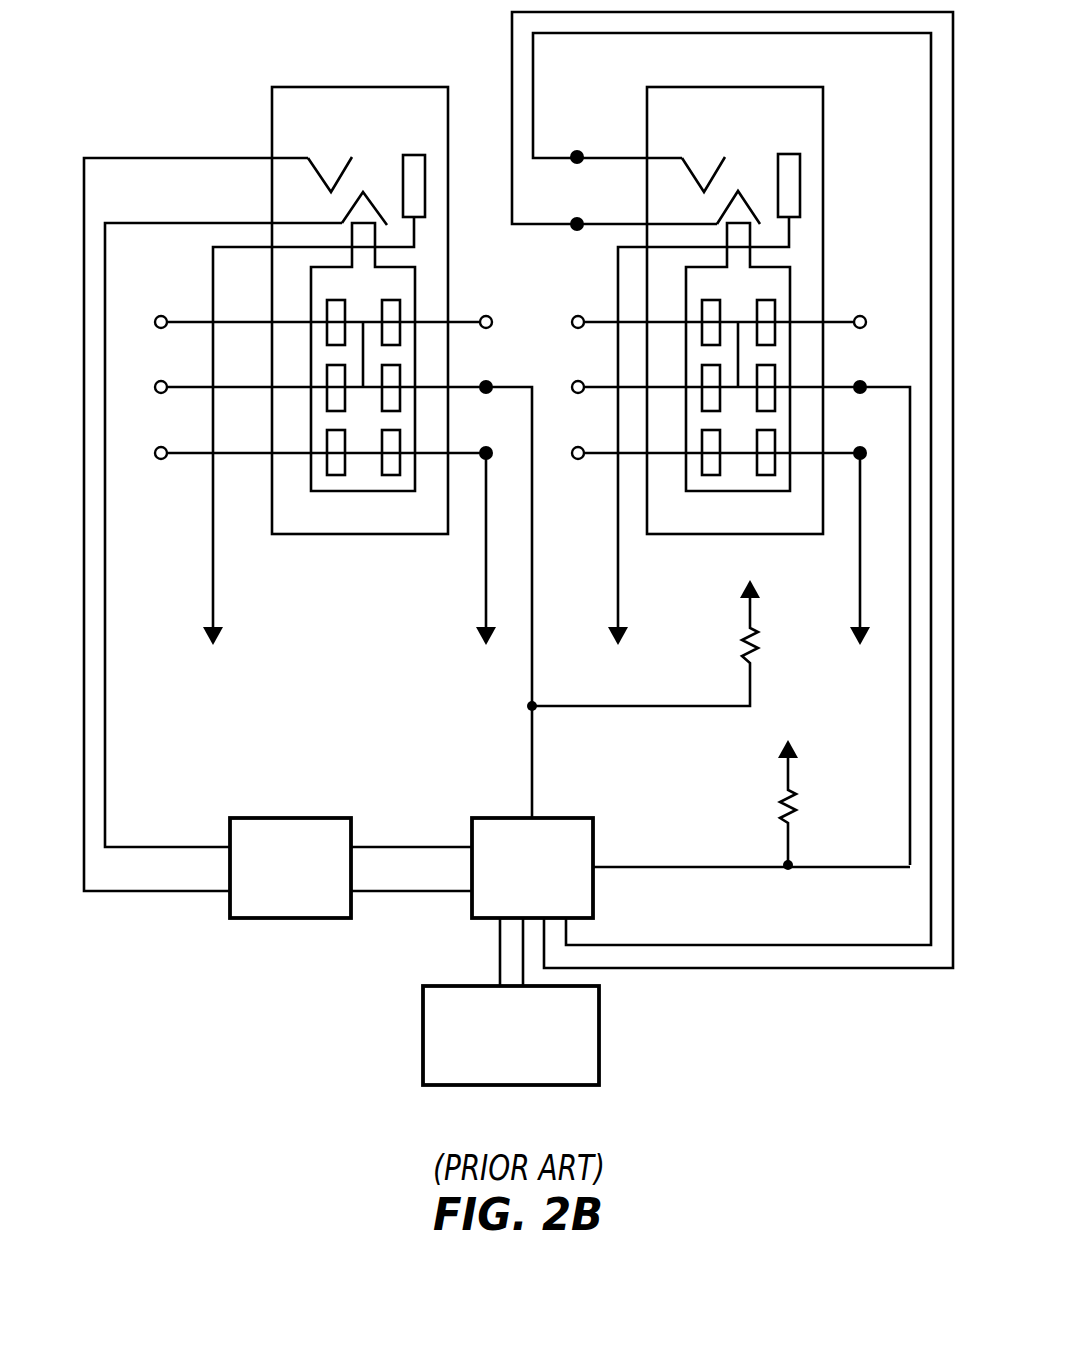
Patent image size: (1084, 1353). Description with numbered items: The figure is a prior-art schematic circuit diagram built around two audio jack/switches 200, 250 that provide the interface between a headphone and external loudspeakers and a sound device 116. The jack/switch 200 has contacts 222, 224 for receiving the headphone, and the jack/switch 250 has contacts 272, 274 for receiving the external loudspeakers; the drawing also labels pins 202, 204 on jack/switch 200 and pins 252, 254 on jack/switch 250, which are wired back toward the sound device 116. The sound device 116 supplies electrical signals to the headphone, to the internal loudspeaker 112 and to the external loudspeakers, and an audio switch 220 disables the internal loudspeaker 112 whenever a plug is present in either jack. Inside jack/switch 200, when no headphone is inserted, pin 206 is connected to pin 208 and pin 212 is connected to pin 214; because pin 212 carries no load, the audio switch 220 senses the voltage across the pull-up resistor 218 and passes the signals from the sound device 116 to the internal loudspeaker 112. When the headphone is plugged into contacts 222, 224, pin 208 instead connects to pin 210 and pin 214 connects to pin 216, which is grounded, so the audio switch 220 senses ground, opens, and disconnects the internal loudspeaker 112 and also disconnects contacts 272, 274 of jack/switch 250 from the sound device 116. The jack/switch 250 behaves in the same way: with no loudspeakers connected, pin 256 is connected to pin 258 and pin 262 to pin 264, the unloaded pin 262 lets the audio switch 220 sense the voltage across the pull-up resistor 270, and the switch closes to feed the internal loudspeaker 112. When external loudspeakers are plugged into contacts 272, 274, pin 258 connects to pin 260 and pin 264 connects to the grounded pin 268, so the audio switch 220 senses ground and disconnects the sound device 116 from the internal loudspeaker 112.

The audio jack/switch 200 is at (319, 535).
The contact 222 is at (353, 183).
The contact 224 is at (353, 209).
The pin 202 is at (196, 524).
The pin 204 is at (259, 532).
The pin 206 is at (304, 337).
The pin 208 is at (330, 599).
The pin 210 is at (312, 546).
The pin 212 is at (485, 308).
The pin 214 is at (485, 374).
The pin 216 is at (485, 441).
The audio jack/switch 250 is at (705, 534).
The contact 272 is at (708, 185).
The contact 274 is at (735, 207).
The pin 252 is at (732, 489).
The pin 254 is at (732, 490).
The pin 256 is at (699, 337).
The pin 258 is at (727, 623).
The pin 260 is at (707, 546).
The pin 262 is at (860, 308).
The pin 264 is at (860, 374).
The pin 268 is at (860, 441).
The pull-up resistor 218 is at (757, 644).
The pull-up resistor 270 is at (797, 804).
The sound device 116 is at (326, 818).
The audio switch 220 is at (570, 818).
The internal loudspeaker 112 is at (599, 1010).